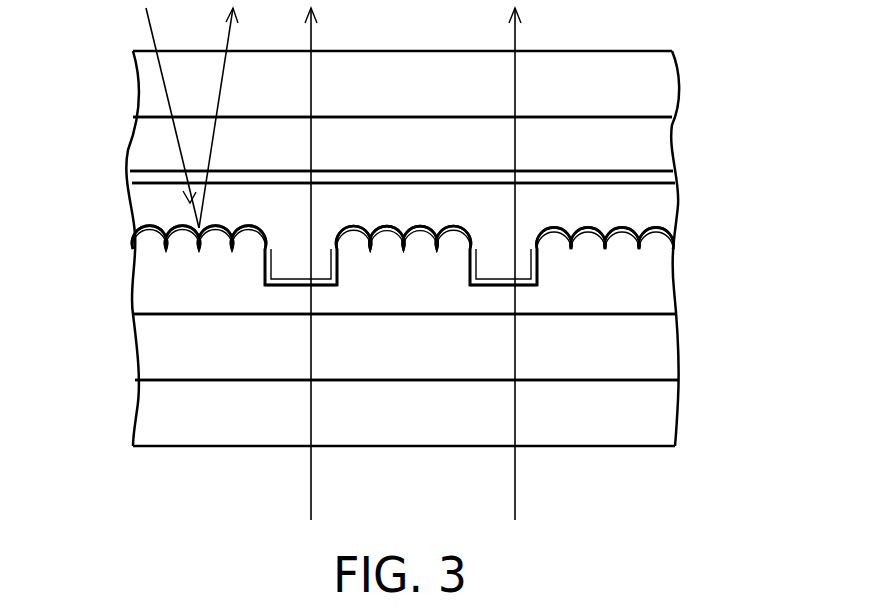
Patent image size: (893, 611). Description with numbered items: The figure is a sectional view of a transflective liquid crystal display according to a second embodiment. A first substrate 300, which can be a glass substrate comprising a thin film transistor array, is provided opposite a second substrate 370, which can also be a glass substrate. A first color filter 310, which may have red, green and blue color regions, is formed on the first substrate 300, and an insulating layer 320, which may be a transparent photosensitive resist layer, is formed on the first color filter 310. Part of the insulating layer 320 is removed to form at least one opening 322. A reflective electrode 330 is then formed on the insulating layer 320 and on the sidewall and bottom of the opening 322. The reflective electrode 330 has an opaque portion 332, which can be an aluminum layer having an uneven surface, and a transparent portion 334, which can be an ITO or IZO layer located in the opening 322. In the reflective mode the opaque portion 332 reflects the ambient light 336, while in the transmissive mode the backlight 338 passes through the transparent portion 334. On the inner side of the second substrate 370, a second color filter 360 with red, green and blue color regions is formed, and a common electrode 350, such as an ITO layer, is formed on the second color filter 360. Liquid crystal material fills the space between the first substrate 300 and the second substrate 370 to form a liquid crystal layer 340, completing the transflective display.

The first substrate 300 is at (655, 418).
The first color filter 310 is at (655, 345).
The insulating layer 320 is at (655, 264).
The opening 322 is at (338, 268).
The reflective electrode 330 is at (135, 225).
The opaque portion 332 is at (216, 234).
The transparent portion 334 is at (287, 289).
The ambient light 336 is at (152, 33).
The backlight 338 is at (313, 511).
The liquid crystal layer 340 is at (668, 204).
The common electrode 350 is at (655, 177).
The second color filter 360 is at (655, 147).
The second substrate 370 is at (668, 84).